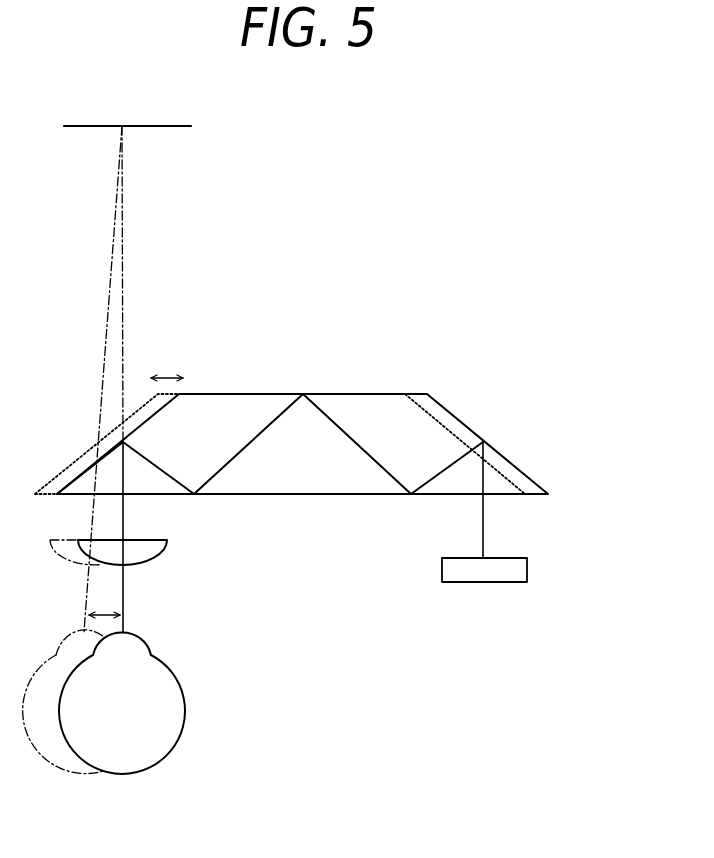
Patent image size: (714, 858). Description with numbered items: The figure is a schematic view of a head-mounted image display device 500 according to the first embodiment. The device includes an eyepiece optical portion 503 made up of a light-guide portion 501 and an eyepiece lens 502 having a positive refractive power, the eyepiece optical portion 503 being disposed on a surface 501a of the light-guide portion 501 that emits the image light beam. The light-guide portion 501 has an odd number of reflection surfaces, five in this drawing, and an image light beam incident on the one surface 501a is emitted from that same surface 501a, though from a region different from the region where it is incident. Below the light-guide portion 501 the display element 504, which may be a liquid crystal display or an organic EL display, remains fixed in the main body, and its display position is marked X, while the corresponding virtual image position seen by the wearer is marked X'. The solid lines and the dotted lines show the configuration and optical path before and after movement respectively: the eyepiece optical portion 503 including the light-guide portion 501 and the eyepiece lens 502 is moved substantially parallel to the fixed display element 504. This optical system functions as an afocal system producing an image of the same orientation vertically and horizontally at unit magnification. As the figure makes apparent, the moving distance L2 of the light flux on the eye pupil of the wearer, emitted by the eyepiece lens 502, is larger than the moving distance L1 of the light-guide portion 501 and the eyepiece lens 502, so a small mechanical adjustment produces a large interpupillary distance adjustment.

The head-mounted image display device 500 is at (305, 407).
The light-guide portion 501 is at (253, 494).
The surface emitting an image light beam 501a is at (385, 494).
The eyepiece lens 502 is at (148, 550).
The eyepiece optical portion 503 is at (283, 545).
The display element 504 is at (510, 573).
The display position X is at (505, 548).
The virtual image position X' is at (150, 379).
The moving distance of the light-guide portion and the eyepiece lens L1 is at (167, 361).
The moving distance of a light flux on the eye pupil L2 is at (88, 607).